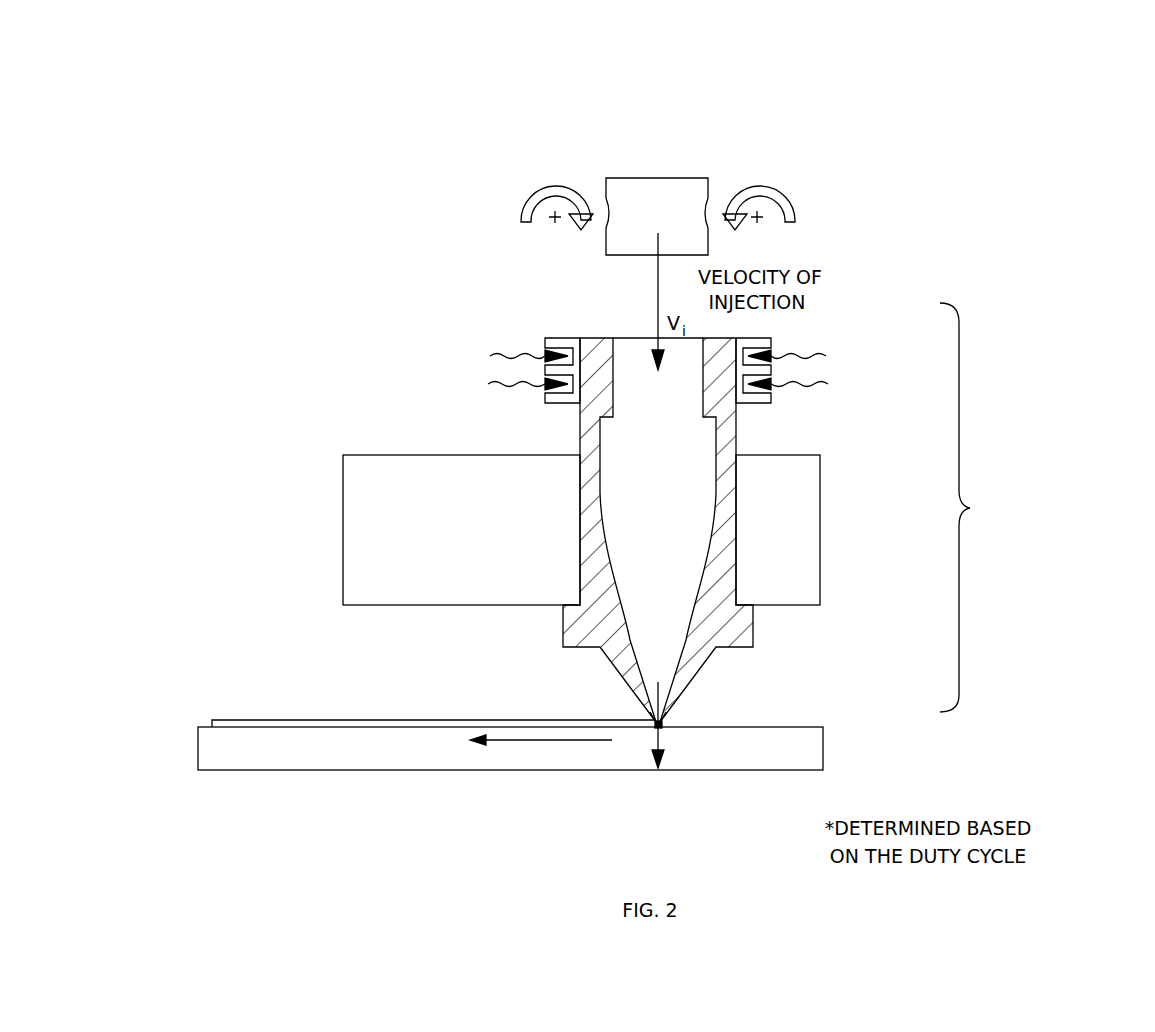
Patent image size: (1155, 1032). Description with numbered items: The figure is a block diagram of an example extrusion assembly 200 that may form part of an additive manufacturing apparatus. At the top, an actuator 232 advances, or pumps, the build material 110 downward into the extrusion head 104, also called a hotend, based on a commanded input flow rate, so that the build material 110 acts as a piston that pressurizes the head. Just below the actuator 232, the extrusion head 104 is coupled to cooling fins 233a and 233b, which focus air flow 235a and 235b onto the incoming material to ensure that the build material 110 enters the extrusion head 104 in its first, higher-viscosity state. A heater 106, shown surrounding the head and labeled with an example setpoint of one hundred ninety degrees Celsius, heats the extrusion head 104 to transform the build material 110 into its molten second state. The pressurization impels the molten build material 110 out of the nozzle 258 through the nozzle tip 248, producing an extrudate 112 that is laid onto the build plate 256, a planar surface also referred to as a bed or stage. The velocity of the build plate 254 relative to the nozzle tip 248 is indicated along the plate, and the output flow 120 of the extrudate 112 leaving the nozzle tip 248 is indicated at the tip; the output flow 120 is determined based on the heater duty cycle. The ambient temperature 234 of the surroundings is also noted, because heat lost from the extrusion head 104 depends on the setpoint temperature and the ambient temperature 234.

The extrusion assembly 200 is at (966, 88).
The actuator 232 is at (790, 177).
The build material 110 is at (669, 514).
The ambient temperature 234 is at (1024, 274).
The cooling fin 233a is at (545, 343).
The cooling fin 233b is at (772, 343).
The air flow 235a is at (515, 390).
The air flow 235b is at (800, 390).
The heater 106 is at (343, 518).
The extrusion head 104 is at (970, 508).
The nozzle 258 is at (562, 632).
The nozzle tip 248 is at (668, 720).
The build plate 256 is at (823, 747).
The extrudate 112 is at (252, 719).
The velocity of build plate 254 is at (522, 758).
The output flow rate 120 is at (662, 734).